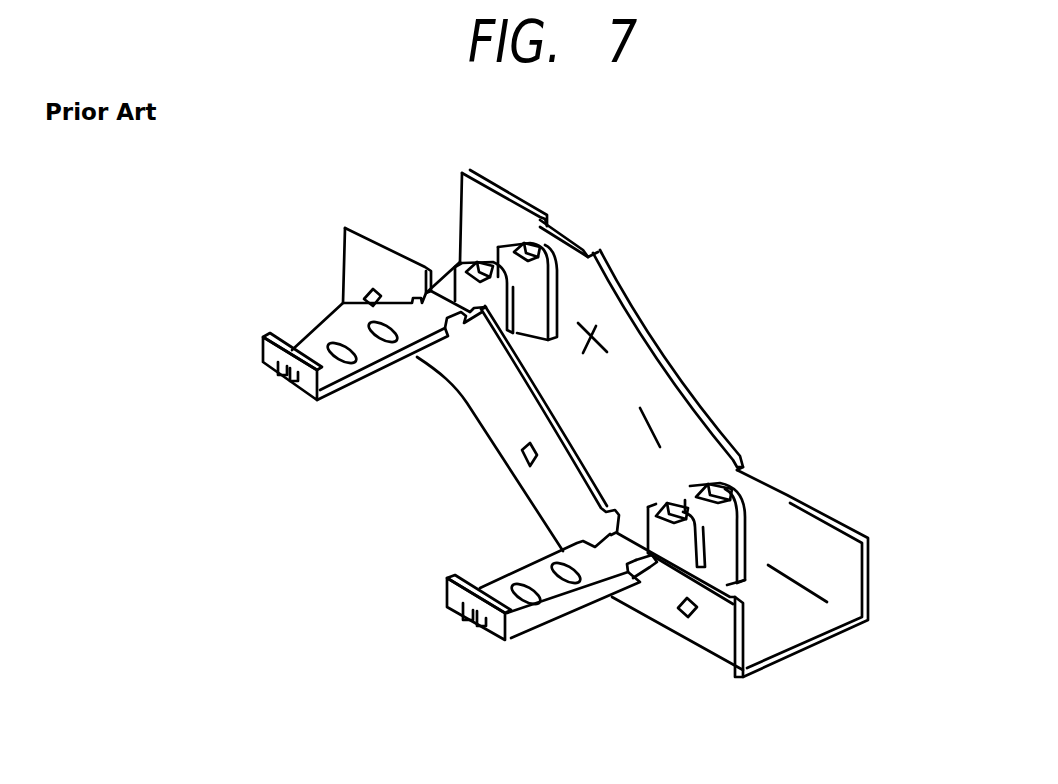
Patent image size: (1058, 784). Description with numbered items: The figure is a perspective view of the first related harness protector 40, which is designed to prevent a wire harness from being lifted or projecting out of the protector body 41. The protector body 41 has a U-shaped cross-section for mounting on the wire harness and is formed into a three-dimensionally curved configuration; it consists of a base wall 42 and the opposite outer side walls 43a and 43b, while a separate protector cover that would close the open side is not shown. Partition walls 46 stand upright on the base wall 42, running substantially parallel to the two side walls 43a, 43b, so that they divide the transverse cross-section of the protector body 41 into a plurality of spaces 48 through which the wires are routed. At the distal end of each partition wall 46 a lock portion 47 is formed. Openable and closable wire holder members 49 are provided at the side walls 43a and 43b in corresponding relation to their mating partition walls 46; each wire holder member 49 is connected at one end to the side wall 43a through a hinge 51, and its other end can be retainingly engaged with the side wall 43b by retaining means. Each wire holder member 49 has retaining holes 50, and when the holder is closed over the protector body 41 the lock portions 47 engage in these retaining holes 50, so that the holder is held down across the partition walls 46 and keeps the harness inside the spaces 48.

The harness protector 40 is at (428, 196).
The protector body 41 is at (675, 356).
The base wall 42 is at (502, 457).
The side wall 43a is at (478, 370).
The side wall 43b is at (707, 421).
The partition wall 46 is at (535, 292).
The lock portion 47 is at (478, 262).
The space 48 is at (598, 333).
The wire holder member 49 is at (310, 347).
The retaining hole 50 is at (378, 328).
The hinge 51 is at (640, 578).